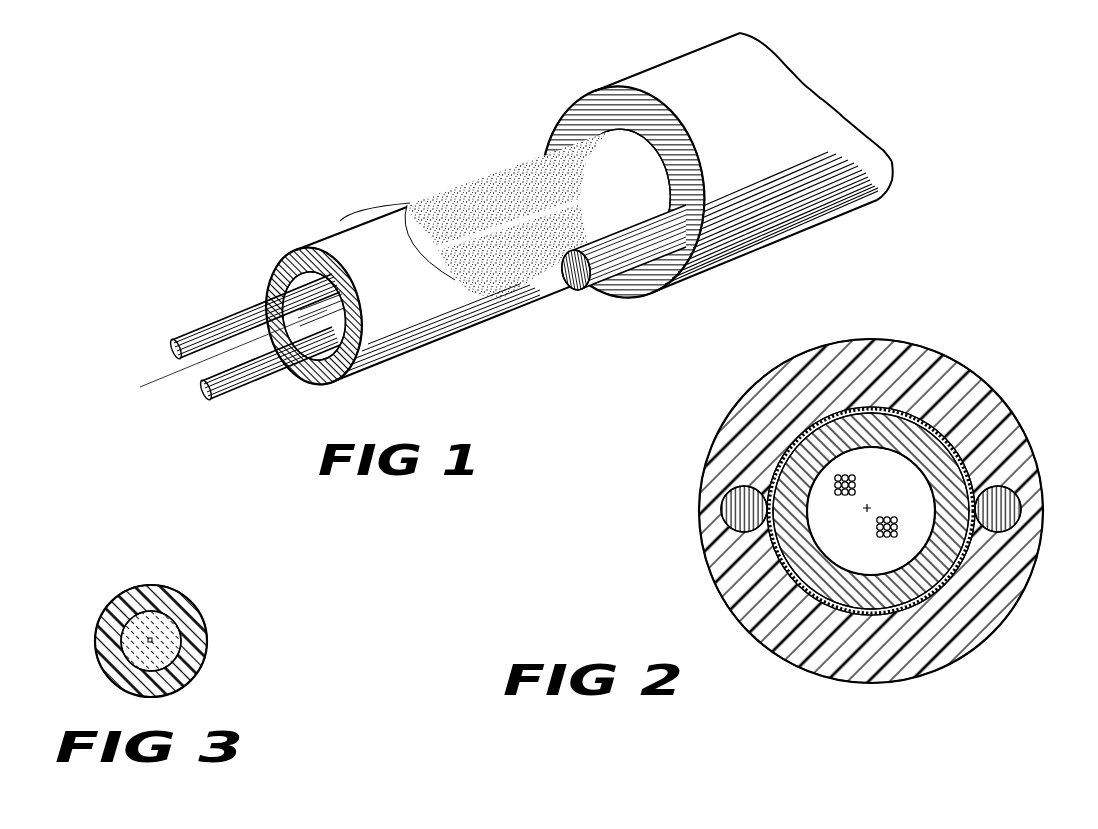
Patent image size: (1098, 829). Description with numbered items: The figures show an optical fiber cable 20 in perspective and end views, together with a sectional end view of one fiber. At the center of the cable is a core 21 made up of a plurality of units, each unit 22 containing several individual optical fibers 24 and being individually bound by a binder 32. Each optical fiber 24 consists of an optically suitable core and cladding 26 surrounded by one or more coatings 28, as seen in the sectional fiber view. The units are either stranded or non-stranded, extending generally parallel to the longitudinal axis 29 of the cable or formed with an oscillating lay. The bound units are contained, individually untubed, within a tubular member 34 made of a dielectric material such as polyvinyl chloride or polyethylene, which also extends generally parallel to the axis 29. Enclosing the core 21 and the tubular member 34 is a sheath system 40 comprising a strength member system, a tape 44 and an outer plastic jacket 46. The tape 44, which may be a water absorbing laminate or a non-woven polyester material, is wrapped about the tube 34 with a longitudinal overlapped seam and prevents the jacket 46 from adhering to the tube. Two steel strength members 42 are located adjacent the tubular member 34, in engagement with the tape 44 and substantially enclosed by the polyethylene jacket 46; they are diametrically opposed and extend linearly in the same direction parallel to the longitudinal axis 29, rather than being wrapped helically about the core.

In FIG. 1, the optical fiber cable 20 is at (510, 237).
In FIG. 2, the optical fiber cable 20 is at (866, 487).
In FIG. 1, the core 21 is at (286, 388).
In FIG. 2, the core 21 is at (923, 519).
In FIG. 1, the unit 22 is at (233, 354).
In FIG. 2, the unit 22 is at (856, 480).
In FIG. 1, the optical fiber 24 is at (172, 352).
In FIG. 3, the optical fiber 24 is at (147, 627).
In FIG. 3, the core and cladding 26 is at (186, 630).
In FIG. 3, the coating 28 is at (142, 593).
In FIG. 1, the longitudinal axis 29 is at (153, 388).
In FIG. 2, the longitudinal axis 29 is at (873, 507).
In FIG. 1, the binder 32 is at (238, 312).
In FIG. 1, the tubular member 34 is at (447, 262).
In FIG. 2, the tubular member 34 is at (797, 546).
In FIG. 1, the sheath system 40 is at (510, 237).
In FIG. 1, the strength member 42 is at (578, 288).
In FIG. 2, the strength member 42 is at (718, 510).
In FIG. 1, the tape 44 is at (473, 330).
In FIG. 2, the tape 44 is at (928, 440).
In FIG. 1, the outer plastic jacket 46 is at (642, 291).
In FIG. 2, the outer plastic jacket 46 is at (1010, 448).